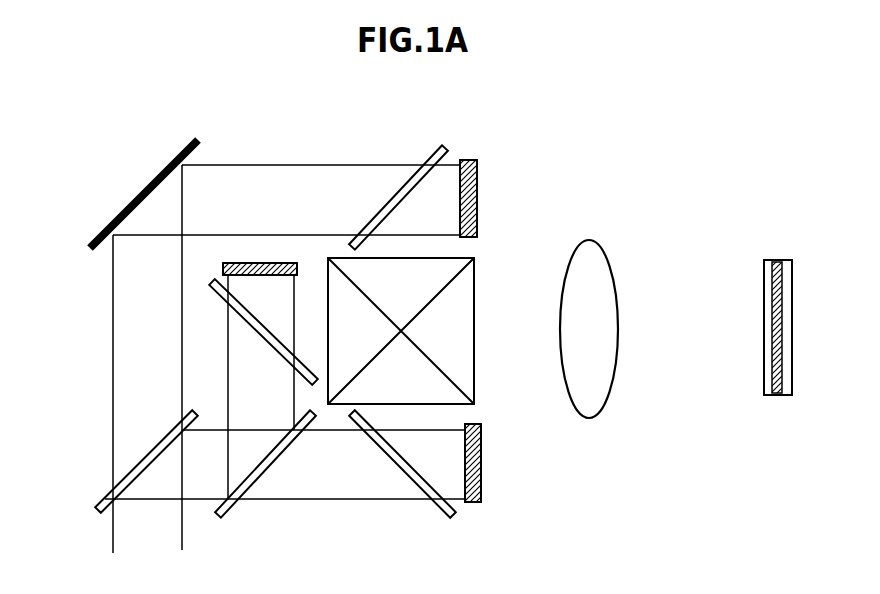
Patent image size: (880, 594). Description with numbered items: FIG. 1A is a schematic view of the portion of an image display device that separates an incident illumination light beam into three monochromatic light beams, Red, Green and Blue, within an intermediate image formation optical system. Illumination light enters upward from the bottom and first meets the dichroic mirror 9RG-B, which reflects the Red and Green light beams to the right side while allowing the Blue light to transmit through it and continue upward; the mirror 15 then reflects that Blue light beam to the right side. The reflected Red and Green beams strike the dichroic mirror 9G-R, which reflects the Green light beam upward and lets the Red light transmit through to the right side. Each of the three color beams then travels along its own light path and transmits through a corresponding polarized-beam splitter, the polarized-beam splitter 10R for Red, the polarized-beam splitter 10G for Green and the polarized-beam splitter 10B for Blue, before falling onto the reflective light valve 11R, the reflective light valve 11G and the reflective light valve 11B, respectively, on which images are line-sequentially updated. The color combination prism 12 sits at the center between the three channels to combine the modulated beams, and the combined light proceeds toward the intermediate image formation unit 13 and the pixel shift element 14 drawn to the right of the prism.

The mirror 15 is at (142, 192).
The polarized-beam splitter 10B is at (438, 150).
The reflective light valve 11B is at (472, 160).
The reflective light valve 11G is at (263, 262).
The polarized-beam splitter 10G is at (220, 293).
The color combination prism 12 is at (474, 282).
The intermediate image formation unit 13 is at (590, 238).
The pixel shift element 14 is at (778, 258).
The dichroic mirror 9RG-B is at (106, 494).
The dichroic mirror 9G-R is at (233, 503).
The polarized-beam splitter 10R is at (437, 505).
The reflective light valve 11R is at (483, 460).